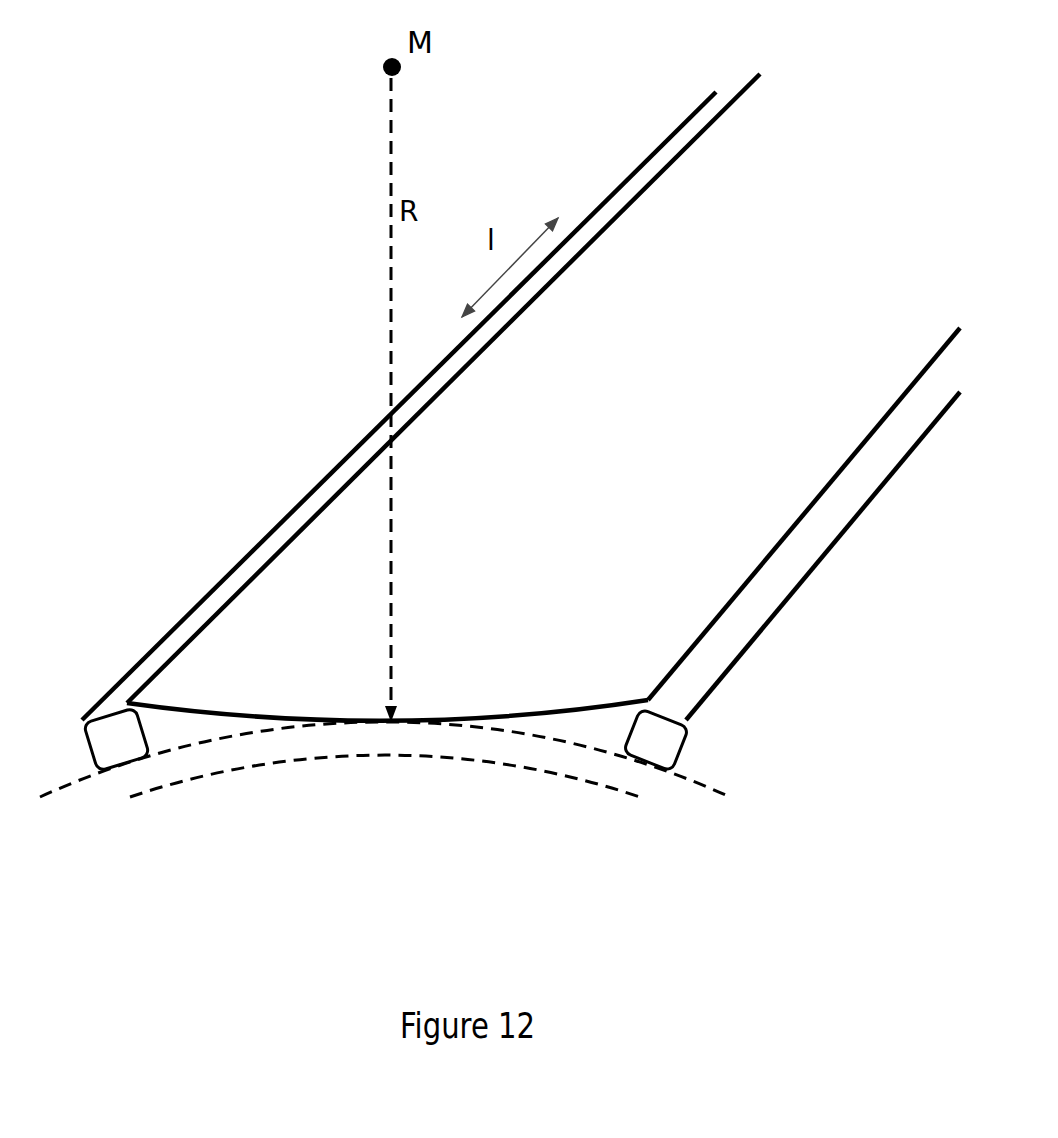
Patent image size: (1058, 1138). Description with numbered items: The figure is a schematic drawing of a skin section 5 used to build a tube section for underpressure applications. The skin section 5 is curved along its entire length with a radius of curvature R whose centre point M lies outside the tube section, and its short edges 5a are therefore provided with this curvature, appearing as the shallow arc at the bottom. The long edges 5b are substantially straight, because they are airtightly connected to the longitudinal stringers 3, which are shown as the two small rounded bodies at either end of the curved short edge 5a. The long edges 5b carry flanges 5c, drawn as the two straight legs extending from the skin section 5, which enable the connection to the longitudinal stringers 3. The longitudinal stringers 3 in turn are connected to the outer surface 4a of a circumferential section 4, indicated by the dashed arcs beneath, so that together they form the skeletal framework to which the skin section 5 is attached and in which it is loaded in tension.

The longitudinal stringer 3 is at (385, 740).
The circumferential section 4 is at (420, 778).
The outer surface of the circumferential section 4a is at (712, 781).
The skin section 5 is at (521, 397).
The short edge of the skin section 5a is at (212, 704).
The long edge of the skin section 5b is at (460, 386).
The flange 5c is at (914, 402).